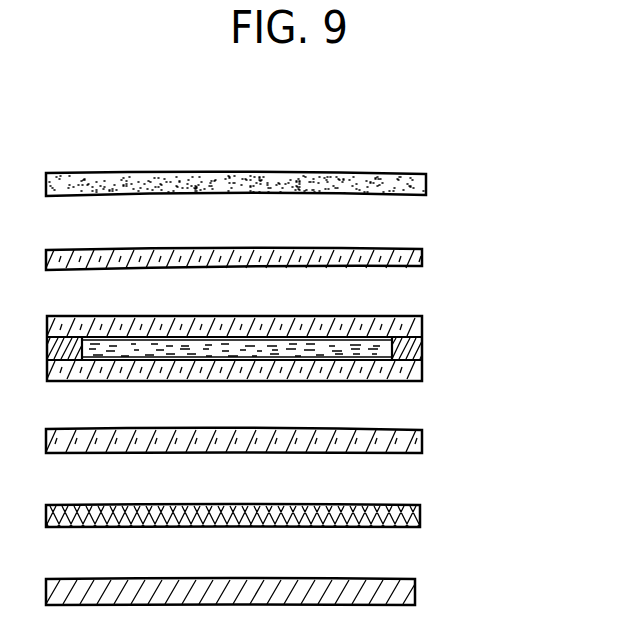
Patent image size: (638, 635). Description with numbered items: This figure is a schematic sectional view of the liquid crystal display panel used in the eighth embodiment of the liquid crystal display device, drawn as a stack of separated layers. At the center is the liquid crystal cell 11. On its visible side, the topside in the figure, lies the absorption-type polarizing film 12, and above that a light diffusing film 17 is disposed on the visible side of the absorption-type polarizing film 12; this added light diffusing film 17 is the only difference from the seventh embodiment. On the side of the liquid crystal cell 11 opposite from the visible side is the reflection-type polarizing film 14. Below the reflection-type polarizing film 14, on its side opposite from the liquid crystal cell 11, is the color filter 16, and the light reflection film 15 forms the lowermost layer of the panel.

The light diffusing film 17 is at (427, 182).
The absorption-type polarizing film 12 is at (422, 258).
The liquid crystal cell 11 is at (434, 351).
The reflection-type polarizing film 14 is at (422, 443).
The color filter 16 is at (420, 518).
The light reflection film 15 is at (415, 590).